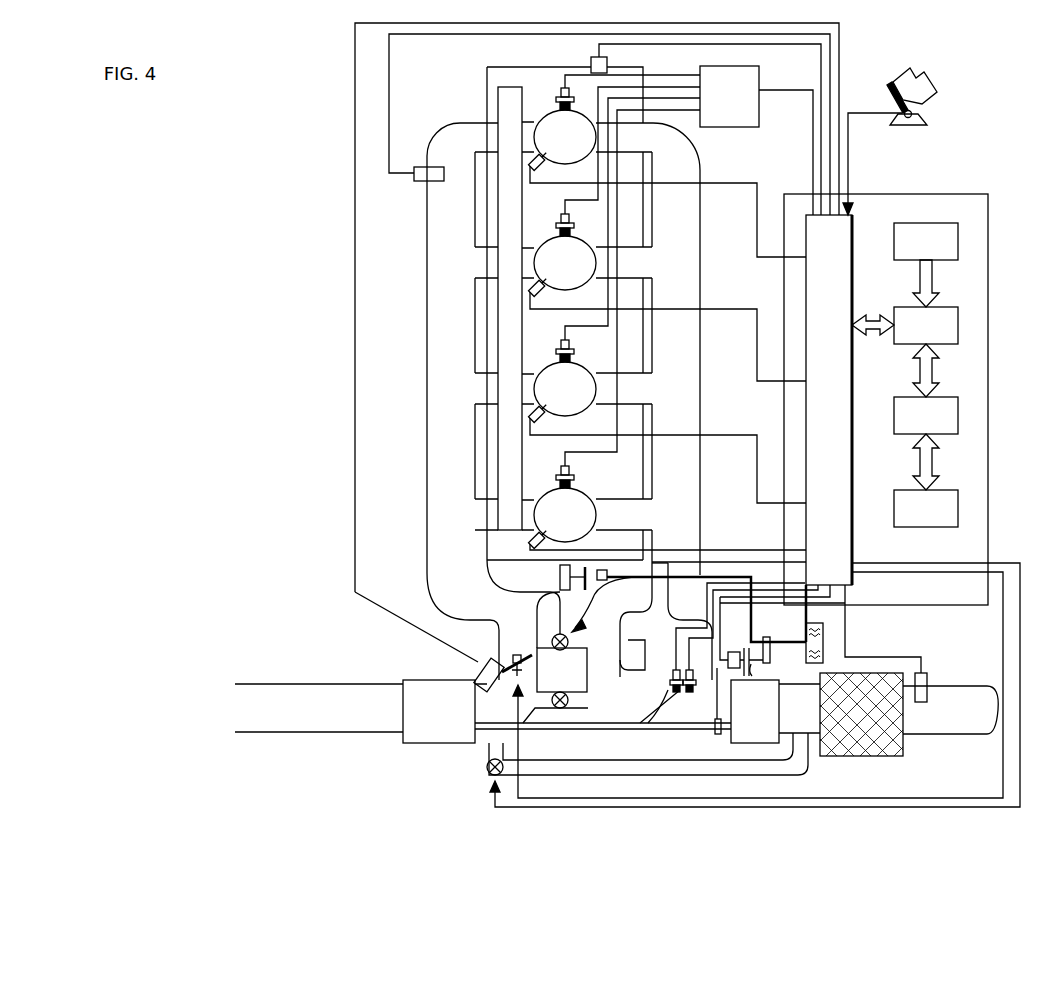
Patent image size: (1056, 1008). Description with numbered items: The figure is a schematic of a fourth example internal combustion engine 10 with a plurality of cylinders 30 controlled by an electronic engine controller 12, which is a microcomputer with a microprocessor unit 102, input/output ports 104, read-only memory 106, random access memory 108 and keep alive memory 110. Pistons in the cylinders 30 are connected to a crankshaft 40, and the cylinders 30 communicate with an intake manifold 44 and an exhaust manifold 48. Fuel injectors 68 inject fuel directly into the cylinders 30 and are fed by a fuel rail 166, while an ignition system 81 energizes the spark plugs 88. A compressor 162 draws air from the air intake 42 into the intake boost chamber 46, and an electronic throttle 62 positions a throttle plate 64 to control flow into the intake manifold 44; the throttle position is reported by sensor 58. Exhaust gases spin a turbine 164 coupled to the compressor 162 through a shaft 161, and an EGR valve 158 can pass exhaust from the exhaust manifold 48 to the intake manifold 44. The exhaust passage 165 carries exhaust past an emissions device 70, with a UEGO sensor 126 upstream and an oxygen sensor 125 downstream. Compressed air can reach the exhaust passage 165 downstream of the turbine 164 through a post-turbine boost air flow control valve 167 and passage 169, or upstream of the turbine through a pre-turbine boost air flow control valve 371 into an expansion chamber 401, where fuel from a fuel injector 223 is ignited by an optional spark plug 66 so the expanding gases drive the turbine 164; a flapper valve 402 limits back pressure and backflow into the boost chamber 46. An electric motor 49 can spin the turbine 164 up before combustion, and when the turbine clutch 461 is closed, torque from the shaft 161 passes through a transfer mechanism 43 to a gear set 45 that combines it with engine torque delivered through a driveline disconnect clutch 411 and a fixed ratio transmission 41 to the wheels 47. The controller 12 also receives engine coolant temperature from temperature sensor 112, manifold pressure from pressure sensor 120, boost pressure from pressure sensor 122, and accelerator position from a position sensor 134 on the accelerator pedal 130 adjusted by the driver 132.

The internal combustion engine 10 is at (312, 153).
The electronic engine controller 12 is at (955, 194).
The cylinders 30 is at (559, 326).
The crankshaft 40 is at (560, 578).
The transmission 41 is at (610, 577).
The air intake 42 is at (319, 708).
The transfer mechanism 43 is at (718, 734).
The intake manifold 44 is at (493, 361).
The gear set 45 is at (770, 650).
The intake boost chamber 46 is at (491, 686).
The wheels 47 is at (806, 630).
The exhaust manifold 48 is at (593, 349).
The electric motor 49 is at (734, 652).
The throttle position sensor 58 is at (540, 673).
The electronic throttle 62 is at (500, 665).
The throttle plate 64 is at (505, 637).
The spark plug 66 is at (668, 700).
The fuel injectors 68 is at (539, 168).
The emissions device 70 is at (861, 714).
The ignition system 81 is at (729, 96).
The spark plugs 88 is at (560, 105).
The microprocessor unit 102 is at (958, 320).
The input/output ports 104 is at (855, 217).
The read-only memory 106 is at (958, 236).
The random access memory 108 is at (958, 410).
The keep alive memory 110 is at (958, 502).
The temperature sensor 112 is at (608, 66).
The pressure sensor 120 is at (424, 182).
The pressure sensor 122 is at (470, 667).
The oxygen sensor 125 is at (928, 678).
The universal exhaust gas oxygen sensor 126 is at (703, 700).
The accelerator pedal 130 is at (888, 92).
The driver 132 is at (935, 80).
The position sensor 134 is at (922, 118).
The EGR valve 158 is at (557, 633).
The shaft 161 is at (575, 730).
The compressor 162 is at (439, 711).
The turbine 164 is at (755, 711).
The exhaust passage 165 is at (918, 750).
The fuel rail 166 is at (498, 118).
The post-turbine boost air flow control valve 167 is at (487, 773).
The passage 169 is at (636, 772).
The fuel injector 223 is at (672, 690).
The pre-turbine boost air flow control valve 371 is at (611, 608).
The expansion chamber 401 is at (617, 643).
The flapper valve 402 is at (567, 692).
The driveline disconnect clutch 411 is at (588, 588).
The turbine clutch 461 is at (755, 664).